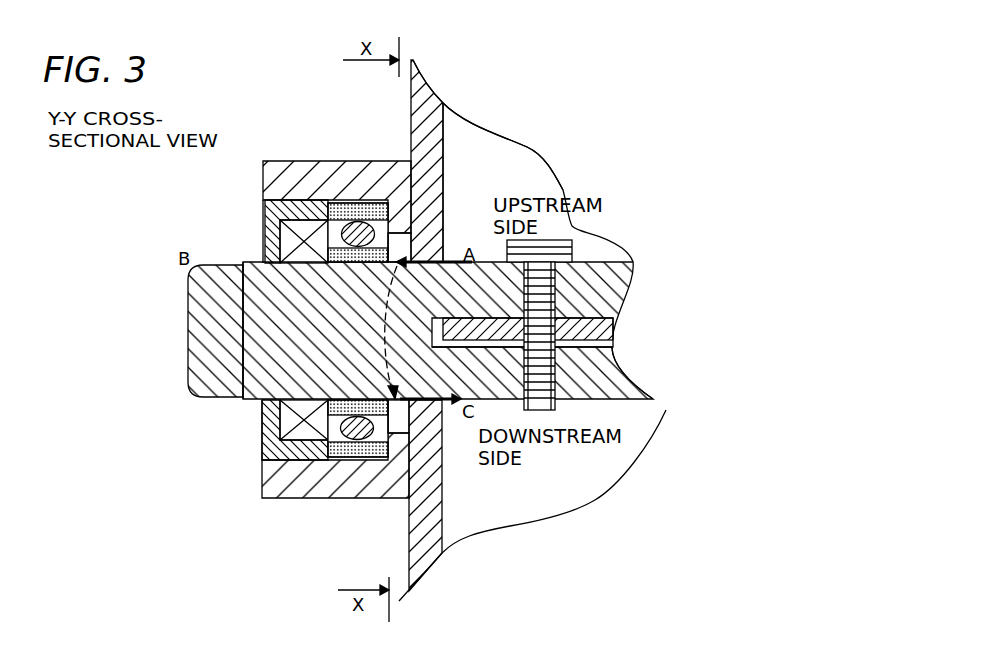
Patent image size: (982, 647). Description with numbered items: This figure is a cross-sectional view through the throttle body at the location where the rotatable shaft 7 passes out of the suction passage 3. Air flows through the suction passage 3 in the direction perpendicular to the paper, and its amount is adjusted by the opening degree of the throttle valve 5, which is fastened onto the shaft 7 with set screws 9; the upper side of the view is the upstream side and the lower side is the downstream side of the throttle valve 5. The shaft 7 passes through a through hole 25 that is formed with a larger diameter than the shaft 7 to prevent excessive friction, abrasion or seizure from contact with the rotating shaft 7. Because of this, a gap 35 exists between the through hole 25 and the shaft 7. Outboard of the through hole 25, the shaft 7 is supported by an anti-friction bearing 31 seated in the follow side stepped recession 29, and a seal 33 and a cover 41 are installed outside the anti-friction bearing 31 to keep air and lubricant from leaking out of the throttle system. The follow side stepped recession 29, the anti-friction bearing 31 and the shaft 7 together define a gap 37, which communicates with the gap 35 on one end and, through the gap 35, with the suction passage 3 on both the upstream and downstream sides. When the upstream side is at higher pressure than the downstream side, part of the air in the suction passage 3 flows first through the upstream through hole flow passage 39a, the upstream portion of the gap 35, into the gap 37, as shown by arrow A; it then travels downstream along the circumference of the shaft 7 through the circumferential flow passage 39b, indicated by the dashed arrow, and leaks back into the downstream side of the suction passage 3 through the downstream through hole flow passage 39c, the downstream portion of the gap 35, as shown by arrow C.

The suction passage 3 is at (479, 166).
The throttle valve 5 is at (617, 342).
The shaft 7 is at (617, 377).
The set screws 9 is at (570, 262).
The through hole 25 is at (437, 256).
The follow side stepped recession 29 is at (363, 207).
The anti-friction bearing 31 is at (343, 210).
The seal 33 is at (264, 185).
The gap 35 is at (451, 255).
The gap 37 is at (401, 234).
The upstream through hole flow passage 39a is at (503, 146).
The circumferential flow passage 39b is at (388, 322).
The downstream through hole flow passage 39c is at (452, 403).
The cover 41 is at (267, 213).